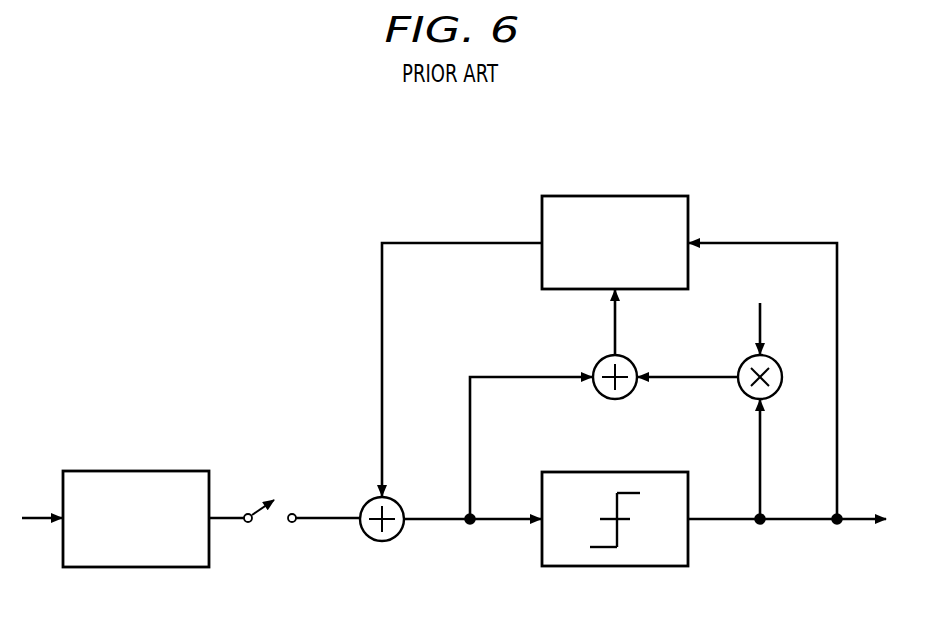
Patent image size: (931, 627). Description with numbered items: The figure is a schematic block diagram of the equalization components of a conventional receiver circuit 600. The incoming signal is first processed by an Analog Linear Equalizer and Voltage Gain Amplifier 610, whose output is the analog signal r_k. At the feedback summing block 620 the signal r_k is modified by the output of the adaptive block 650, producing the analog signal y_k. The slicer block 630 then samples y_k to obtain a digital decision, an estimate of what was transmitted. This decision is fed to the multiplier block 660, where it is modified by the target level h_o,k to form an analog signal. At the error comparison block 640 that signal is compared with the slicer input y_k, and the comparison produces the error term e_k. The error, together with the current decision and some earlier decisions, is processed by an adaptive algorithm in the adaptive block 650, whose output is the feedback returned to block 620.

The conventional receiver circuit 600 is at (198, 262).
The Analog Linear Equalizer and Voltage Gain Amplifier 610 is at (146, 471).
The feedback summing block 620 is at (372, 541).
The slicer block 630 is at (542, 541).
The error comparison block 640 is at (598, 395).
The adaptive block 650 is at (541, 218).
The multiplier block 660 is at (743, 394).